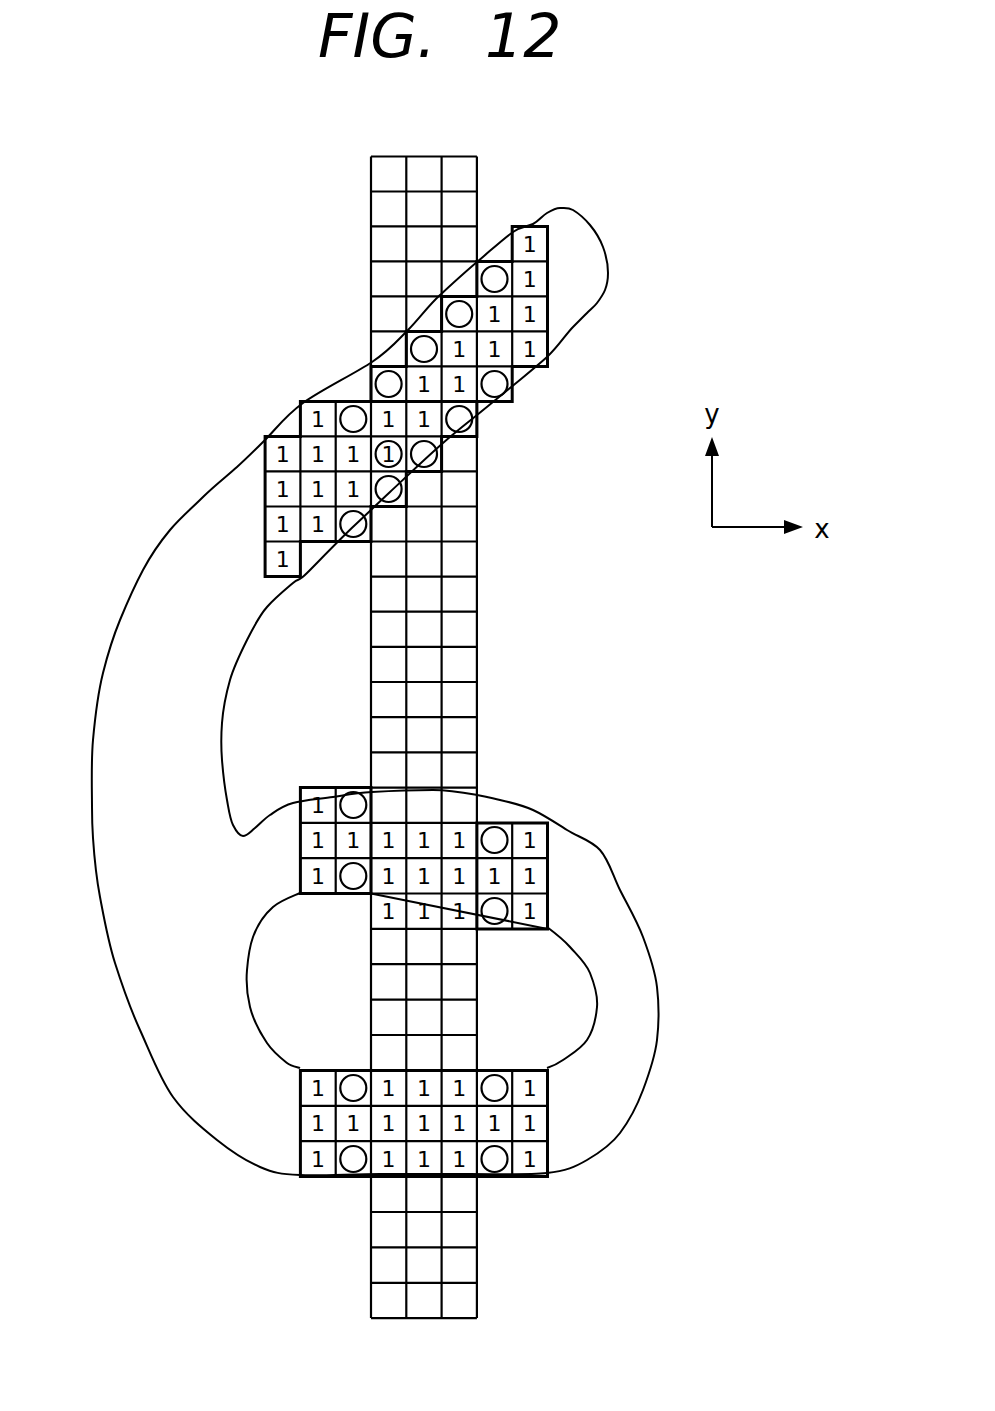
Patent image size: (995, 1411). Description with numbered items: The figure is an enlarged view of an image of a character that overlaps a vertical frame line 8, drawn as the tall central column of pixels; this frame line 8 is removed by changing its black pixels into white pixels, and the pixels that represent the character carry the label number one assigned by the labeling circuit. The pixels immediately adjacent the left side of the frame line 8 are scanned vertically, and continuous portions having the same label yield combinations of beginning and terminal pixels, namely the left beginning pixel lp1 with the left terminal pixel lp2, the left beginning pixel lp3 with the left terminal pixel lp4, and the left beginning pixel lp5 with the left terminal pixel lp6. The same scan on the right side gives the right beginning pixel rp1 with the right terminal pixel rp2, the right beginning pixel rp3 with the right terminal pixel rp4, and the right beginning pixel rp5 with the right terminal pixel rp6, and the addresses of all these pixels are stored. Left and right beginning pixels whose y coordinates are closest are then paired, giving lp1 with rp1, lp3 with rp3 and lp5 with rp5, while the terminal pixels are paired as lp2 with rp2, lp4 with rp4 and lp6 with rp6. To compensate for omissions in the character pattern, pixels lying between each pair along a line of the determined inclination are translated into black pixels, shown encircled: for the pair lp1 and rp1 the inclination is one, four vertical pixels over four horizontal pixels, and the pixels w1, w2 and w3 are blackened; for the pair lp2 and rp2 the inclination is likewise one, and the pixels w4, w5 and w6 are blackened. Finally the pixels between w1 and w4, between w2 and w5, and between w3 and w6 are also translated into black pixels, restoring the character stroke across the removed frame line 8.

The vertical frame line 8 is at (485, 148).
The pixel w1 is at (384, 371).
The pixel w2 is at (416, 338).
The pixel w3 is at (450, 302).
The pixel w4 is at (401, 498).
The pixel w5 is at (436, 464).
The pixel w6 is at (471, 430).
The left beginning pixel lp1 is at (351, 405).
The left terminal pixel lp2 is at (351, 538).
The left beginning pixel lp3 is at (351, 792).
The left terminal pixel lp4 is at (352, 889).
The left beginning pixel lp5 is at (352, 1075).
The left terminal pixel lp6 is at (352, 1172).
The right beginning pixel rp1 is at (492, 266).
The right terminal pixel rp2 is at (502, 397).
The right beginning pixel rp3 is at (494, 827).
The right terminal pixel rp4 is at (497, 924).
The right beginning pixel rp5 is at (497, 1075).
The right terminal pixel rp6 is at (497, 1172).